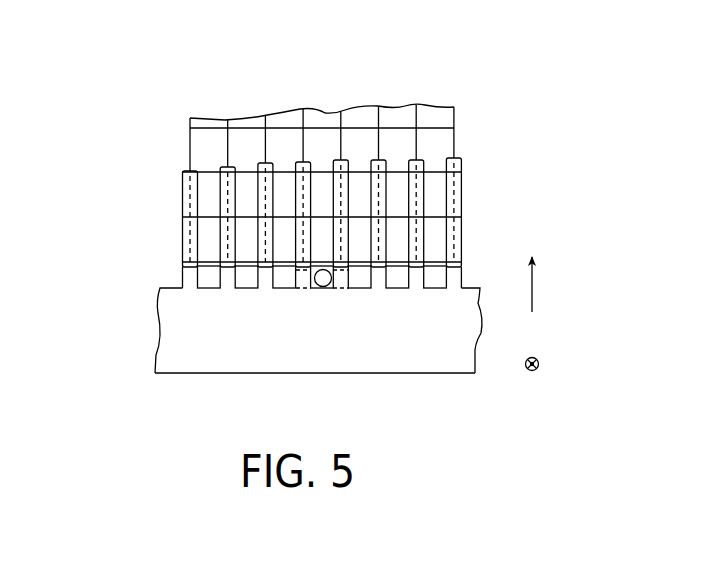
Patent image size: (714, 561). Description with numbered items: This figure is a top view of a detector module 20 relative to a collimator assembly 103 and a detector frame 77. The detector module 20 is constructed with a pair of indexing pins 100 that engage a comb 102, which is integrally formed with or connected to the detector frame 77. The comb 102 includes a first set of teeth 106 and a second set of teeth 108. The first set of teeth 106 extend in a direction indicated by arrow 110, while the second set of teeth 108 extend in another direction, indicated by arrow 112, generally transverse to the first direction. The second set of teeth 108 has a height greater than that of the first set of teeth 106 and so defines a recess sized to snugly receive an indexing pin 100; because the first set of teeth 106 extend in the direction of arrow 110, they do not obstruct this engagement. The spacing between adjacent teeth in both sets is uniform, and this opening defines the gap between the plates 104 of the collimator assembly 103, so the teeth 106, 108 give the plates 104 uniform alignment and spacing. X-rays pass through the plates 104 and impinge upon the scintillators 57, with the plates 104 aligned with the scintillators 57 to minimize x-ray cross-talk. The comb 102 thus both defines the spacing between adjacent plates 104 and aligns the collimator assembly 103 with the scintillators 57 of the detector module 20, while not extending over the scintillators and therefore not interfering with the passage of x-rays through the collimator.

The detector module 20 is at (466, 60).
The scintillators 57 is at (233, 150).
The detector frame 77 is at (141, 373).
The indexing pin 100 is at (325, 287).
The comb 102 is at (133, 316).
The collimator assembly 103 is at (148, 192).
The collimator plates 104 is at (200, 168).
The first set of teeth 106 is at (163, 271).
The second set of teeth 108 is at (308, 280).
The arrow 110 is at (532, 282).
The arrow 112 is at (534, 371).